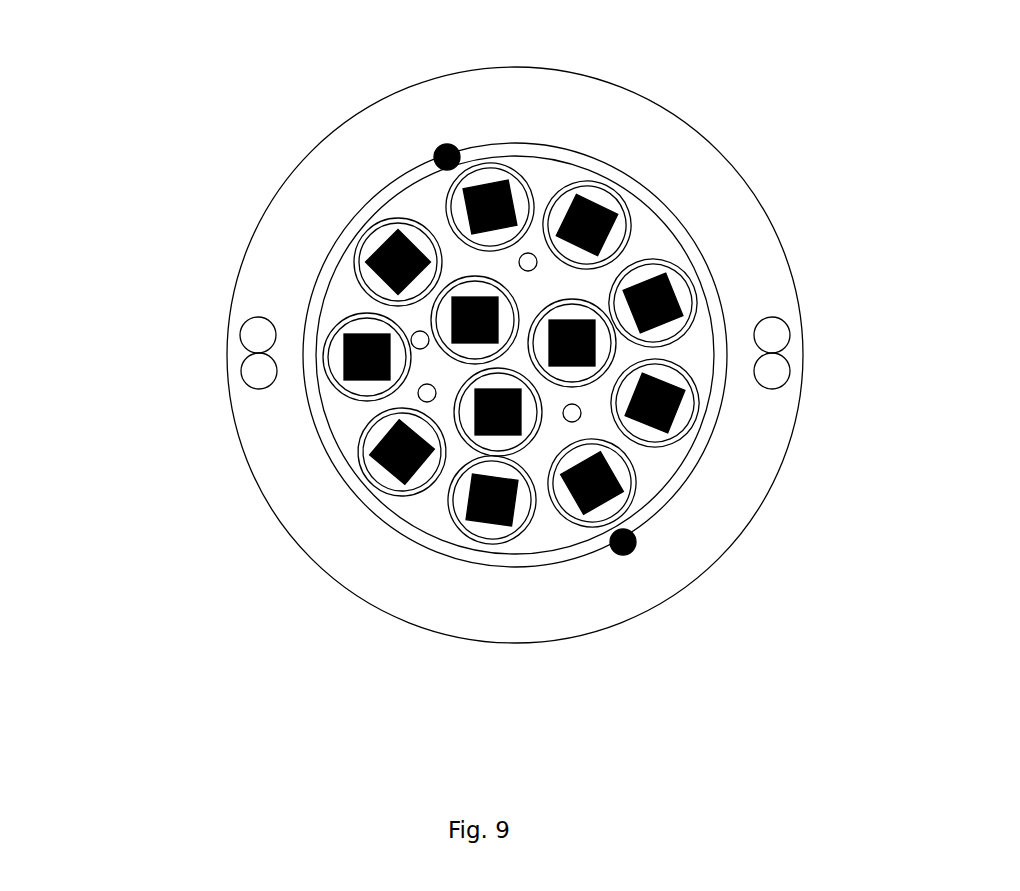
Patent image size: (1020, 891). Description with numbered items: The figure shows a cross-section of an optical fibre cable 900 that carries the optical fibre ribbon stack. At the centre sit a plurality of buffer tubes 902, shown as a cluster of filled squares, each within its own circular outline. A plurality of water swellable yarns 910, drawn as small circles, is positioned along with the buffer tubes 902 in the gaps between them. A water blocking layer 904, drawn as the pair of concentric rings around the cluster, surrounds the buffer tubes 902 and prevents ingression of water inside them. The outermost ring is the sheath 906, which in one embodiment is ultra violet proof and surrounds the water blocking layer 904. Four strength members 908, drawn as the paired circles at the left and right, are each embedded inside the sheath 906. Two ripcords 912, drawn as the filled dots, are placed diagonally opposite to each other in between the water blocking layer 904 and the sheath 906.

The optical fibre cable 900 is at (673, 290).
The buffer tubes 902 is at (623, 212).
The water blocking layer 904 is at (708, 433).
The sheath 906 is at (300, 235).
The strength members 908 is at (258, 335).
The water swellable yarns 910 is at (418, 395).
The ripcords 912 is at (636, 542).